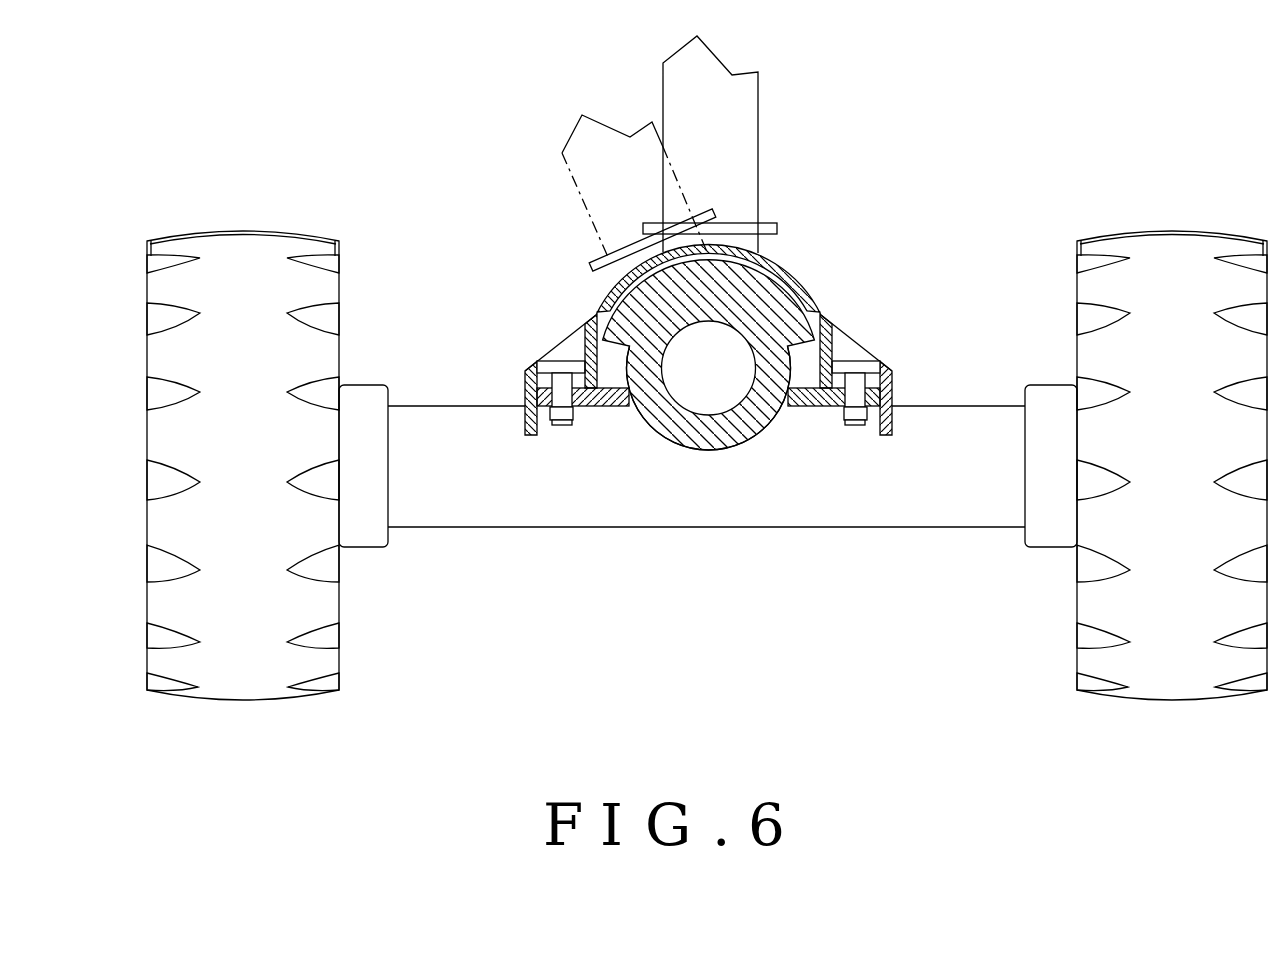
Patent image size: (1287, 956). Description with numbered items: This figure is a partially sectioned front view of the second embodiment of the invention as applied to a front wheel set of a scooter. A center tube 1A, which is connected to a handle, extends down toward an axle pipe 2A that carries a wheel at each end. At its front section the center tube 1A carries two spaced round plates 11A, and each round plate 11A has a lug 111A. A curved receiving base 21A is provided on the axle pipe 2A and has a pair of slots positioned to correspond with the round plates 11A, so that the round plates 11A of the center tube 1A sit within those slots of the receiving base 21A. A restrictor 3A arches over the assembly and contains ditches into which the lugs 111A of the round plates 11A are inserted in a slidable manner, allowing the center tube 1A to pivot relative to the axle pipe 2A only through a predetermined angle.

The center tube 1A is at (713, 322).
The round plate 11A is at (730, 430).
The lug 111A is at (577, 396).
The axle pipe 2A is at (989, 430).
The receiving base 21A is at (811, 398).
The restrictor 3A is at (772, 318).